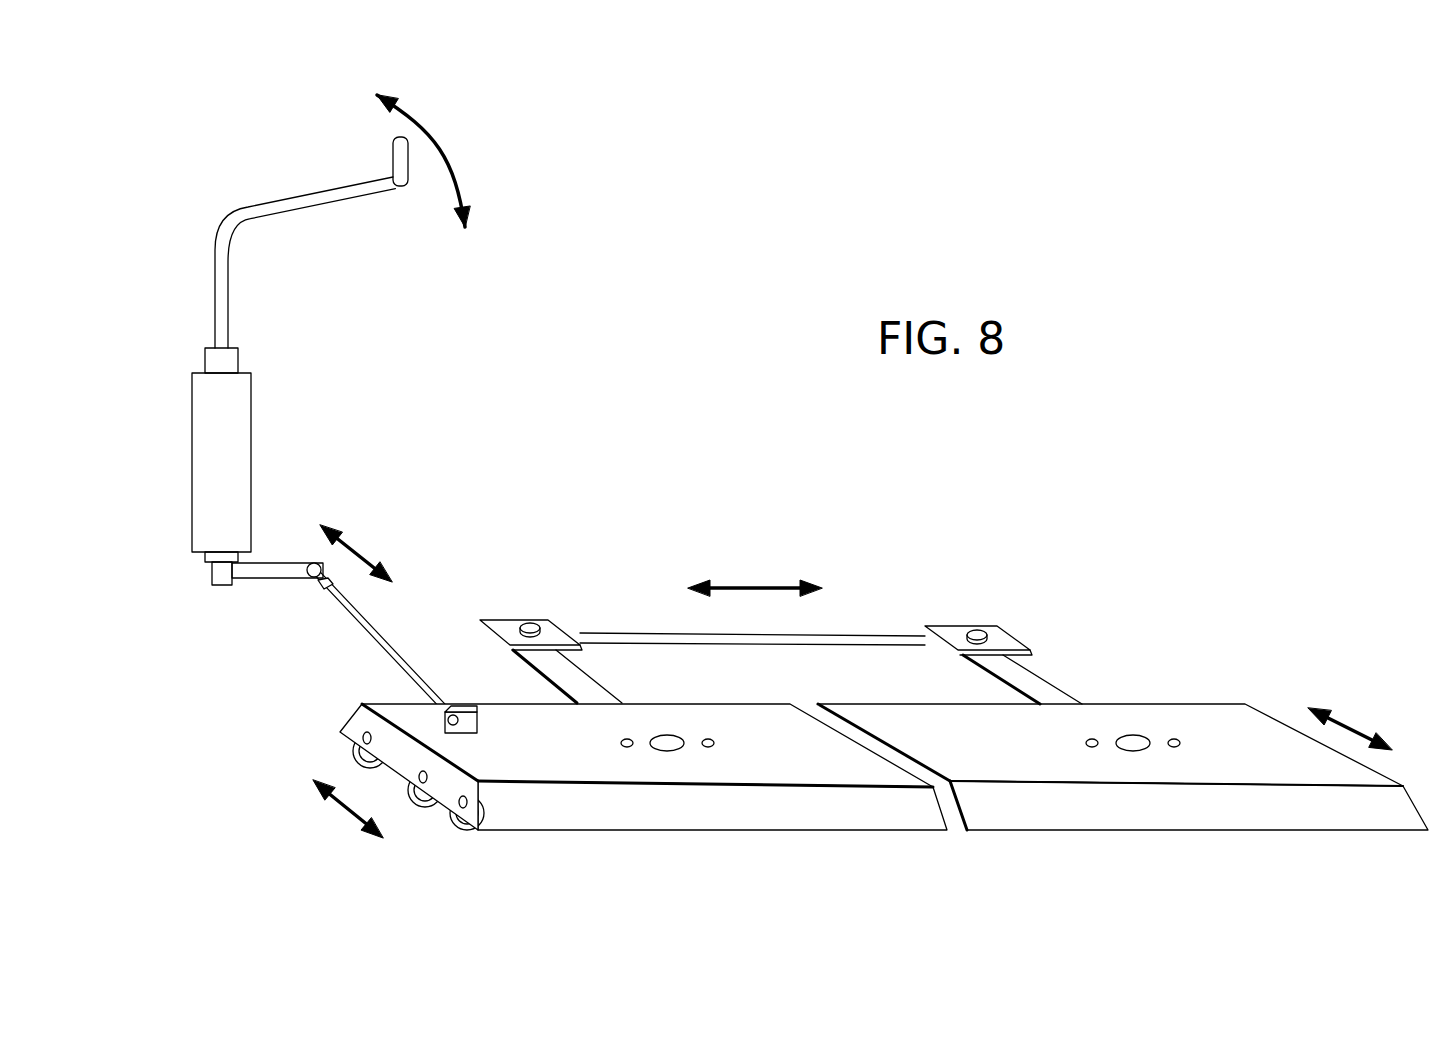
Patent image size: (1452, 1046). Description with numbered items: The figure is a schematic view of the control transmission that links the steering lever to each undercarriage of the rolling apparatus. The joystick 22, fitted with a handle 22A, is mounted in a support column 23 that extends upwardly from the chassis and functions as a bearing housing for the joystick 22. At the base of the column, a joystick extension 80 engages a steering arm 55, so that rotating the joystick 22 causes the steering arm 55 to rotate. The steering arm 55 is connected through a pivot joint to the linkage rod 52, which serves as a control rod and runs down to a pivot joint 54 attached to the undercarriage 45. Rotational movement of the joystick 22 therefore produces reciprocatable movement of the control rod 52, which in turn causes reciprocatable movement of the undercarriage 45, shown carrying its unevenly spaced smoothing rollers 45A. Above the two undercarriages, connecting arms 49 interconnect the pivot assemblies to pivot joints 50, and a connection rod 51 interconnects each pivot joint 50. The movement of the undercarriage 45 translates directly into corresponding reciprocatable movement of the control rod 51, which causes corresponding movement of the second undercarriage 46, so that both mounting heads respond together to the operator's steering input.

The joystick 22 is at (257, 213).
The handle 22A is at (398, 148).
The support column 23 is at (232, 437).
The joystick extension 80 is at (218, 570).
The steering arm 55 is at (275, 572).
The linkage rod 52 is at (380, 632).
The pivot joint 54 is at (460, 708).
The connecting arms 49 is at (587, 687).
The connection rod 51 is at (853, 637).
The pivot joints 50 is at (1005, 638).
The undercarriage 45 is at (640, 805).
The smoothing rollers 45A is at (353, 752).
The undercarriage 46 is at (1130, 808).